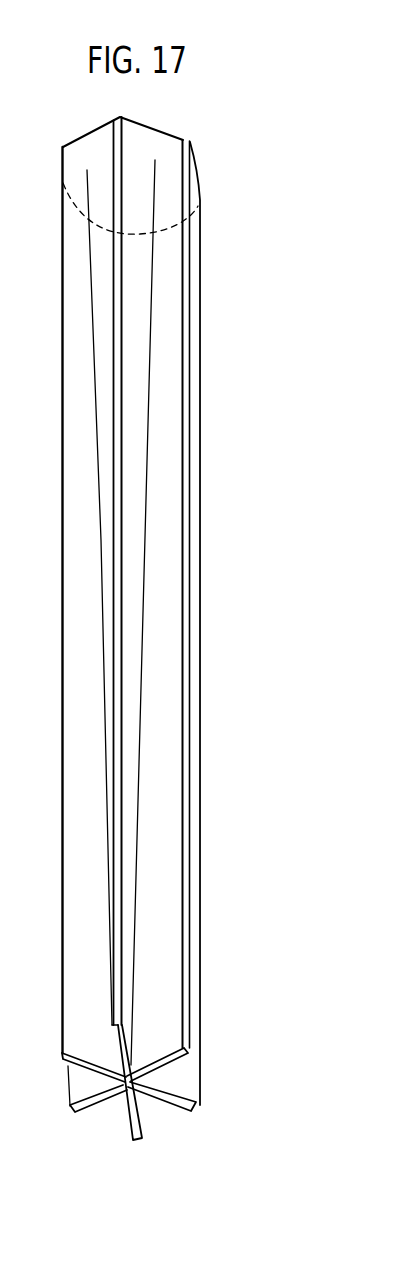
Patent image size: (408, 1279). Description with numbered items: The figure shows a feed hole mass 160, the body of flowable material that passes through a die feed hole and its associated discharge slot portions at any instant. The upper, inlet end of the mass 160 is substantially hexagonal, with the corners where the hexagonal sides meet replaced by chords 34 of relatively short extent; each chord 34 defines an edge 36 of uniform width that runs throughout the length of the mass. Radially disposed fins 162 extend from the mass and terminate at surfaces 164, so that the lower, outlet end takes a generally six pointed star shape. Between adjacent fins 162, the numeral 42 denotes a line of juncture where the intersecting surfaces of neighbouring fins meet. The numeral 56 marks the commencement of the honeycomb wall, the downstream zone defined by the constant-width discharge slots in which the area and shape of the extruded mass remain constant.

The chords 34 is at (118, 118).
The edge 36 is at (113, 410).
The line of juncture 42 is at (97, 492).
The commencement of the wall of the honeycomb 56 is at (88, 1058).
The feed hole mass 160 is at (215, 192).
The radially disposed fins 162 is at (175, 832).
The terminating surfaces 164 is at (195, 1097).